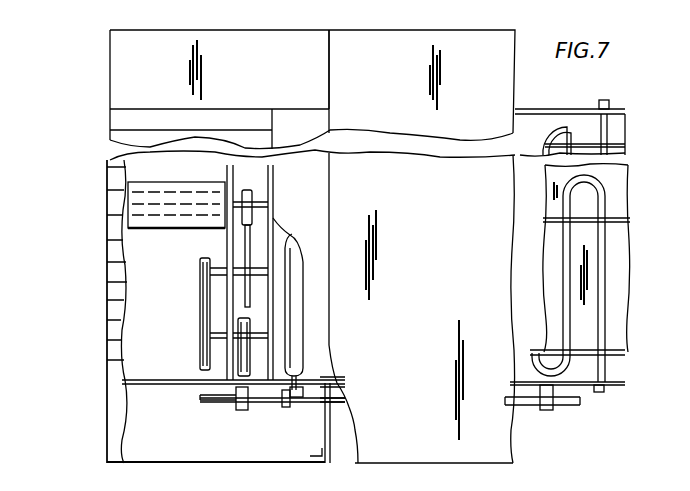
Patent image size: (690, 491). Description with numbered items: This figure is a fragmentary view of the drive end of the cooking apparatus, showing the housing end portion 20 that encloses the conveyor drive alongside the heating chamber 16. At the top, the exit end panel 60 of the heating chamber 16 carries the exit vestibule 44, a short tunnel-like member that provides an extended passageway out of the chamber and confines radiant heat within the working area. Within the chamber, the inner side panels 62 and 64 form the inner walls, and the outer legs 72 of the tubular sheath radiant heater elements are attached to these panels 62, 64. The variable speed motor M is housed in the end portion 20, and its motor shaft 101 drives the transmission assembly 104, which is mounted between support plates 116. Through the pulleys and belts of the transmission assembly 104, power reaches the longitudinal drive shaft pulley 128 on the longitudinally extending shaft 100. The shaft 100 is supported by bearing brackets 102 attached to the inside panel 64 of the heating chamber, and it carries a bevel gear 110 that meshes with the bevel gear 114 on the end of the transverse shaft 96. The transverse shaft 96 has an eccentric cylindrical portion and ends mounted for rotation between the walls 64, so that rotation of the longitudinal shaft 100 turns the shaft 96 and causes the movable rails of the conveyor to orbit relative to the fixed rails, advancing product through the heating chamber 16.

The heating chamber 16 is at (432, 266).
The end portion 20 is at (107, 278).
The exit vestibule 44 is at (318, 110).
The exit end panel 60 is at (329, 54).
The inner side panel 62 is at (617, 392).
The inner side panel 64 is at (575, 108).
The outer legs 72 is at (610, 132).
The transverse shaft 96 is at (303, 345).
The longitudinally extending shaft 100 is at (338, 413).
The motor shaft 101 is at (266, 196).
The bearing brackets 102 is at (546, 410).
The transmission assembly 104 is at (152, 338).
The bevel gear 110 is at (286, 406).
The bevel gear 114 is at (303, 395).
The support plates 116 is at (271, 247).
The longitudinal drive shaft pulley 128 is at (238, 415).
The variable speed motor M is at (148, 232).